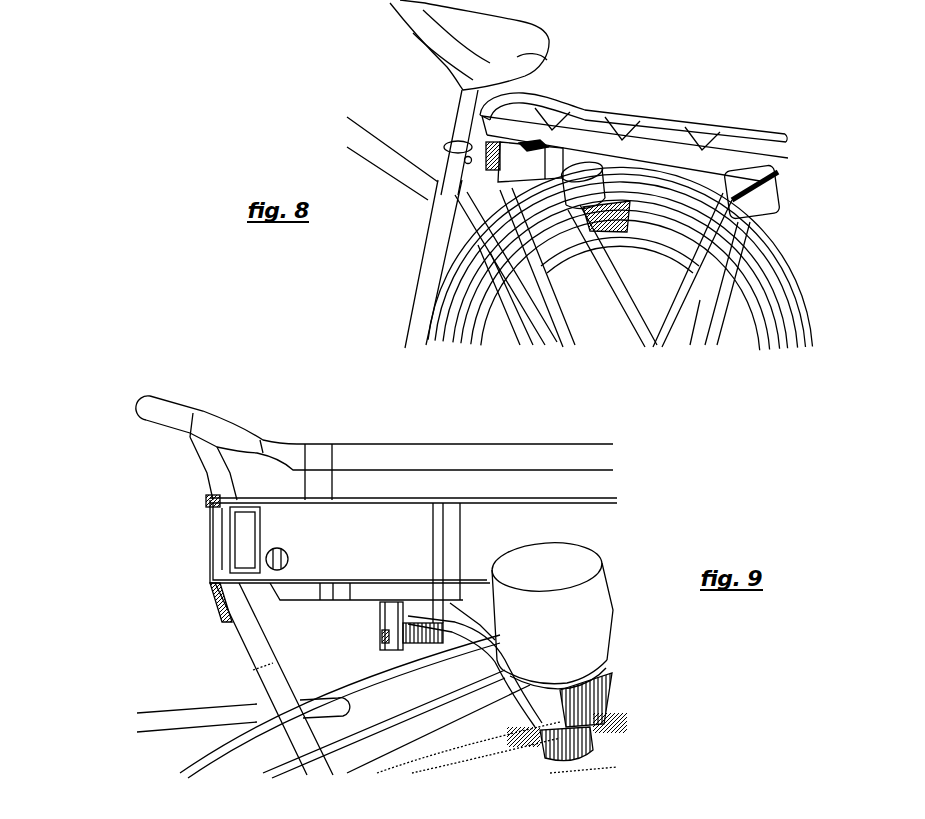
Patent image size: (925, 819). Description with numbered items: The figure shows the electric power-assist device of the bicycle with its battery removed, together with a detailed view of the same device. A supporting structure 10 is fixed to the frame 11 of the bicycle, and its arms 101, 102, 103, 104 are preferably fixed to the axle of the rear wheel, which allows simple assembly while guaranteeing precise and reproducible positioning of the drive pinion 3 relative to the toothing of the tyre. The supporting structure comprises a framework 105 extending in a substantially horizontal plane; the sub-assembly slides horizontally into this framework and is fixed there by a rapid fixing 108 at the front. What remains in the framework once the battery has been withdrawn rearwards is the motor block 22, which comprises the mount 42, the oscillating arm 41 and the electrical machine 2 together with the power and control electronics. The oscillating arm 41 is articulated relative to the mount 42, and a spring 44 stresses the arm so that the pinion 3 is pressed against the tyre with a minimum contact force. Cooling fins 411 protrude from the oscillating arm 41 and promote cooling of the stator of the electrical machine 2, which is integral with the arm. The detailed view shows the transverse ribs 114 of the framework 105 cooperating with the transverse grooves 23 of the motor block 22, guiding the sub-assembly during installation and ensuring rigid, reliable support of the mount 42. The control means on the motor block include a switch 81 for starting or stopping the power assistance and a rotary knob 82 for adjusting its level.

In FIG. 8, the supporting structure 10 is at (713, 130).
In FIG. 9, the supporting structure 10 is at (163, 410).
In FIG. 8, the frame 11 is at (415, 310).
In FIG. 8, the electrical machine 2 is at (573, 173).
In FIG. 9, the electrical machine 2 is at (558, 630).
In FIG. 9, the drive pinion 3 is at (587, 755).
In FIG. 9, the motor block 22 is at (407, 556).
In FIG. 9, the transverse grooves 23 is at (222, 504).
In FIG. 9, the oscillating arm 41 is at (481, 613).
In FIG. 9, the mount 42 is at (375, 595).
In FIG. 9, the spring 44 is at (433, 645).
In FIG. 9, the switch 81 is at (243, 540).
In FIG. 9, the rotary knob 82 is at (283, 557).
In FIG. 8, the arm of the supporting structure 101 is at (543, 307).
In FIG. 9, the arm of the supporting structure 101 is at (255, 657).
In FIG. 8, the arm of the supporting structure 102 is at (687, 287).
In FIG. 8, the arm of the supporting structure 103 is at (757, 223).
In FIG. 8, the arm of the supporting structure 104 is at (620, 300).
In FIG. 8, the framework 105 is at (583, 133).
In FIG. 9, the framework 105 is at (597, 498).
In FIG. 8, the rapid fixing 108 is at (487, 153).
In FIG. 9, the transverse ribs 114 is at (222, 503).
In FIG. 9, the cooling fins 411 is at (580, 710).